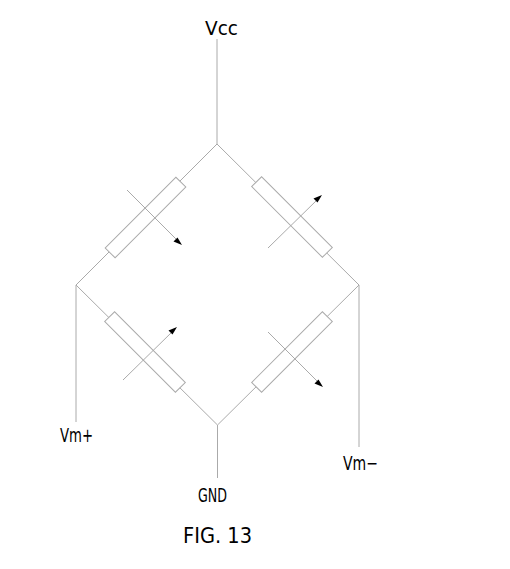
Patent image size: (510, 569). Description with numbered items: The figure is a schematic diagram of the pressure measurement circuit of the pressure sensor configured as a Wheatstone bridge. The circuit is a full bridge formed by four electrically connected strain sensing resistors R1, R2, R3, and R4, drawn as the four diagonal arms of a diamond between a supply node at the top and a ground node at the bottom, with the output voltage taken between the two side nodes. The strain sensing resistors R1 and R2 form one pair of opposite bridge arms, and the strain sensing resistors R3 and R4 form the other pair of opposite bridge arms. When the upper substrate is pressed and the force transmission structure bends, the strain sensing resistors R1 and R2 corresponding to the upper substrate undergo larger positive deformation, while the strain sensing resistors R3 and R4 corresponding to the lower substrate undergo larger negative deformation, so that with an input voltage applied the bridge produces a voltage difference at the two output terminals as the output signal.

The strain sensing resistor R1 is at (143, 217).
The strain sensing resistor R2 is at (292, 358).
The strain sensing resistor R3 is at (302, 217).
The strain sensing resistor R4 is at (145, 358).